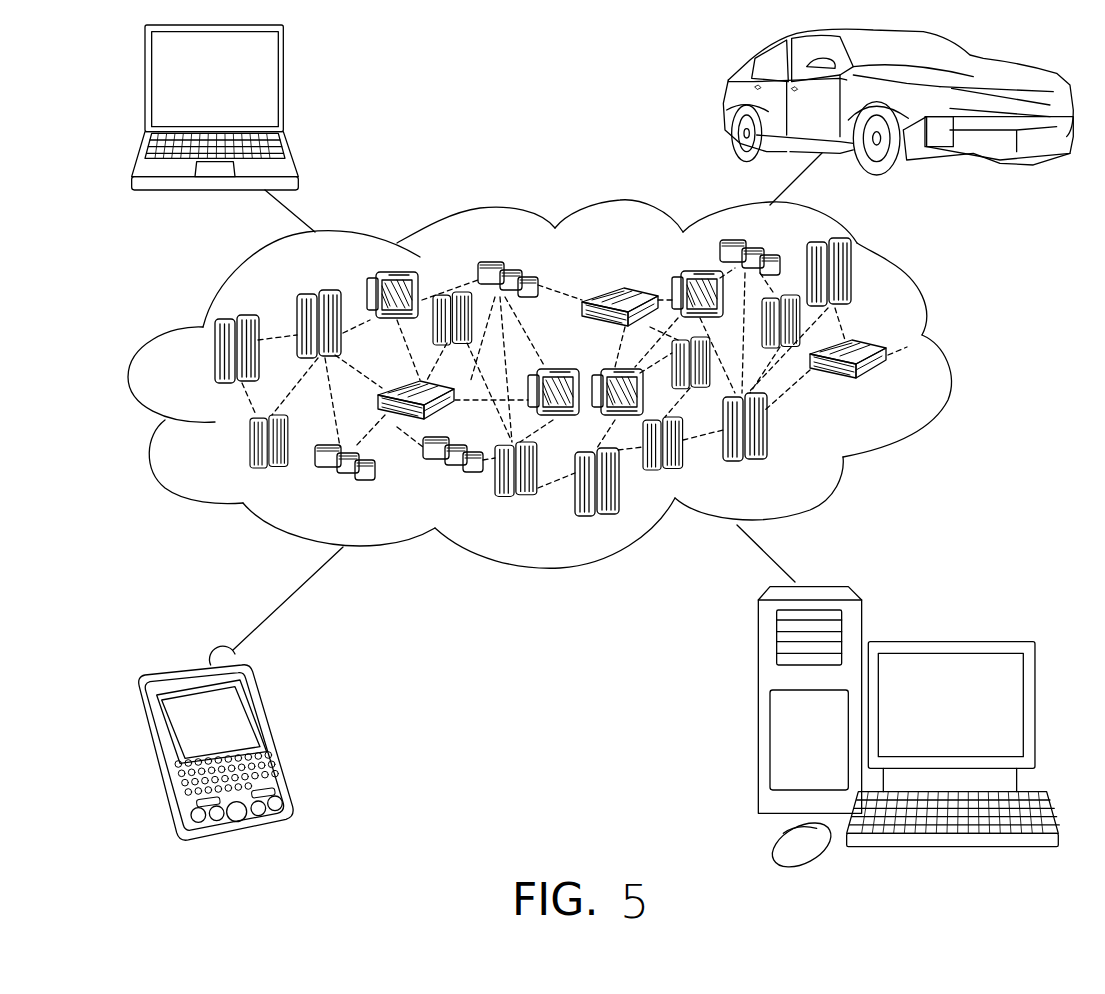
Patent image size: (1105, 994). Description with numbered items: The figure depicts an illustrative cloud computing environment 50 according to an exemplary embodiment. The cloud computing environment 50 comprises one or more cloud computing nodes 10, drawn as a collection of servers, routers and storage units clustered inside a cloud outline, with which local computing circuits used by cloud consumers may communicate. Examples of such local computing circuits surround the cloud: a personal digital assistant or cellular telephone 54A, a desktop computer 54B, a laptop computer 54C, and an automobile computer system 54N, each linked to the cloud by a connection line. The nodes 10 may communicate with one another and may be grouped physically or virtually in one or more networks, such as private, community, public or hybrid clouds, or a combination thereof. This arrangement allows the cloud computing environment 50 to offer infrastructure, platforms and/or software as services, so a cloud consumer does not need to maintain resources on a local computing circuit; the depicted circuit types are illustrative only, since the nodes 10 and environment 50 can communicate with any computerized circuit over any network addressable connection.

The cloud computing environment 50 is at (950, 357).
The cloud computing nodes 10 is at (893, 388).
The personal digital assistant or cellular telephone 54A is at (275, 737).
The desktop computer 54B is at (947, 640).
The laptop computer 54C is at (285, 87).
The automobile computer system 54N is at (728, 104).